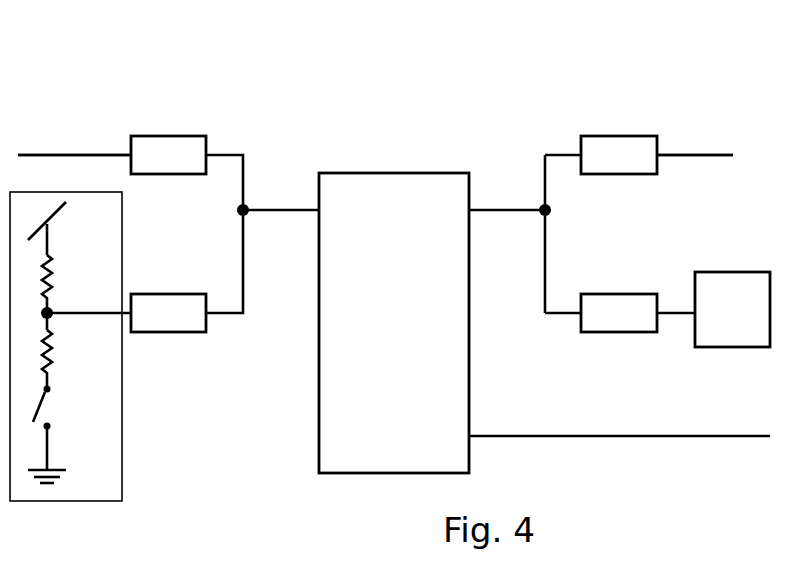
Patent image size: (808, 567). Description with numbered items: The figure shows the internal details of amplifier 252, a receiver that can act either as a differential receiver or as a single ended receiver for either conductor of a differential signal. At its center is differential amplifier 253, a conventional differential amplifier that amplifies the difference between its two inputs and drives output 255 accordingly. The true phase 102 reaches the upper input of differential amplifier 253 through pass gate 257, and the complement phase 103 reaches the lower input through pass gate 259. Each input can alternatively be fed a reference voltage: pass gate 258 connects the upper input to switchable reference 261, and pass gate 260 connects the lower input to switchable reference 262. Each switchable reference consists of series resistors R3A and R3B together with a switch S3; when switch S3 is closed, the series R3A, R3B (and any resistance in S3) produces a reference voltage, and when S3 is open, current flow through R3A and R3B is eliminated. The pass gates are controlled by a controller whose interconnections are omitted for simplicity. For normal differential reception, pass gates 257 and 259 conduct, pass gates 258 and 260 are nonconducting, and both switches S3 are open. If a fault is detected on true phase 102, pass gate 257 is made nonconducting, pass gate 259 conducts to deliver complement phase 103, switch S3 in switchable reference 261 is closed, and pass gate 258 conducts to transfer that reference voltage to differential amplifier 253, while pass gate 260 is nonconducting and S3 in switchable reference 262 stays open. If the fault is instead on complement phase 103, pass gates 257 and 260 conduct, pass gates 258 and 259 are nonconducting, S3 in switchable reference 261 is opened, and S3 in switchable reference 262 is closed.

The amplifier 252 is at (362, 76).
The true phase 102 is at (38, 155).
The complement phase 103 is at (714, 152).
The differential amplifier 253 is at (415, 364).
The output 255 is at (648, 436).
The pass gate 257 is at (180, 136).
The pass gate 258 is at (159, 332).
The pass gate 259 is at (610, 136).
The pass gate 260 is at (630, 332).
The switchable reference 261 is at (143, 370).
The switchable reference 262 is at (733, 272).
The resistor R3A is at (80, 267).
The resistor R3B is at (87, 349).
The switch S3 is at (89, 409).